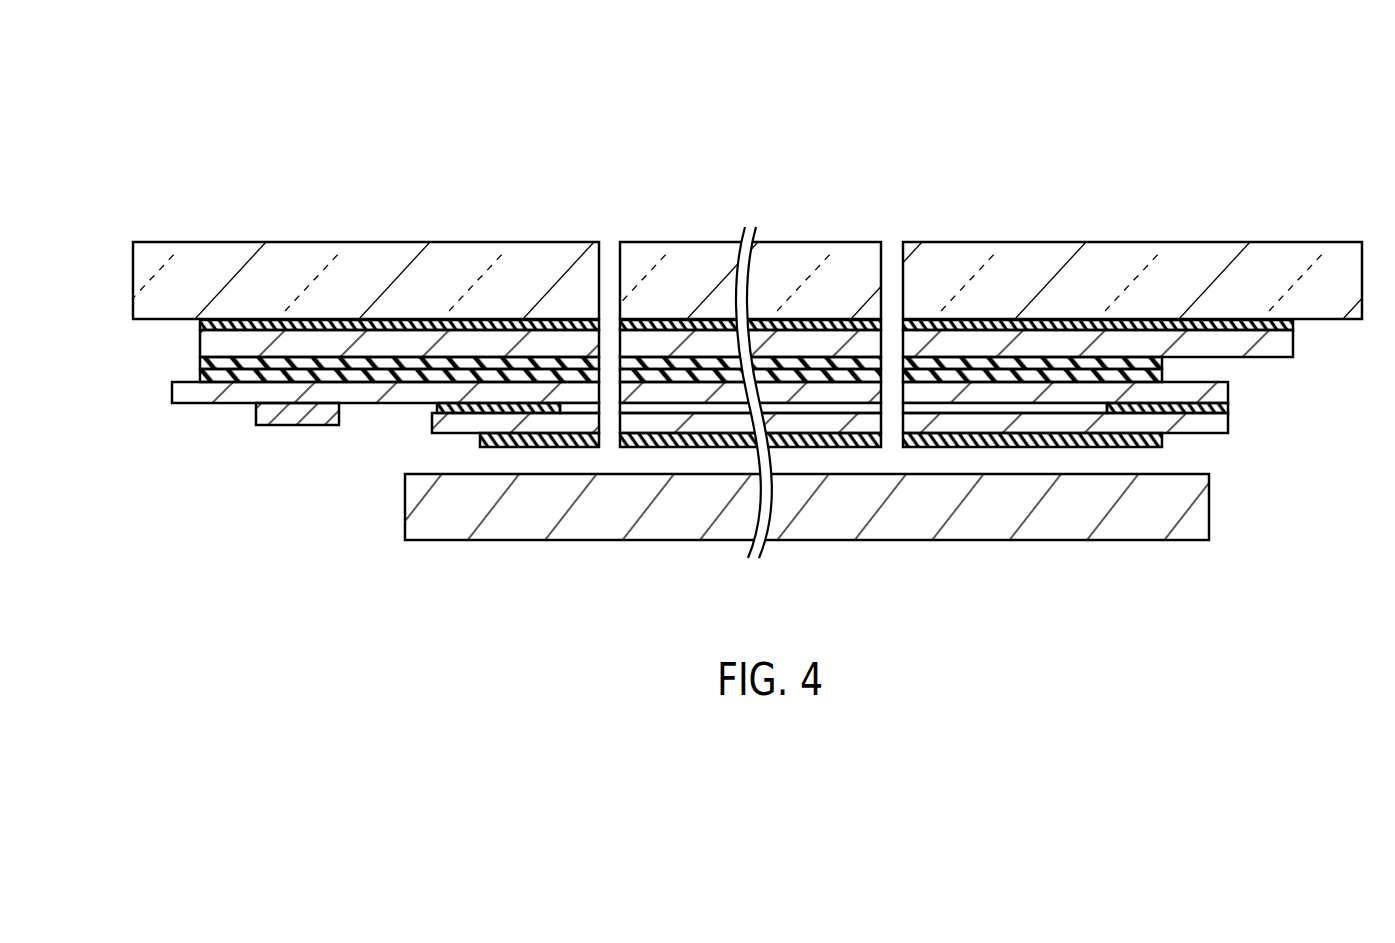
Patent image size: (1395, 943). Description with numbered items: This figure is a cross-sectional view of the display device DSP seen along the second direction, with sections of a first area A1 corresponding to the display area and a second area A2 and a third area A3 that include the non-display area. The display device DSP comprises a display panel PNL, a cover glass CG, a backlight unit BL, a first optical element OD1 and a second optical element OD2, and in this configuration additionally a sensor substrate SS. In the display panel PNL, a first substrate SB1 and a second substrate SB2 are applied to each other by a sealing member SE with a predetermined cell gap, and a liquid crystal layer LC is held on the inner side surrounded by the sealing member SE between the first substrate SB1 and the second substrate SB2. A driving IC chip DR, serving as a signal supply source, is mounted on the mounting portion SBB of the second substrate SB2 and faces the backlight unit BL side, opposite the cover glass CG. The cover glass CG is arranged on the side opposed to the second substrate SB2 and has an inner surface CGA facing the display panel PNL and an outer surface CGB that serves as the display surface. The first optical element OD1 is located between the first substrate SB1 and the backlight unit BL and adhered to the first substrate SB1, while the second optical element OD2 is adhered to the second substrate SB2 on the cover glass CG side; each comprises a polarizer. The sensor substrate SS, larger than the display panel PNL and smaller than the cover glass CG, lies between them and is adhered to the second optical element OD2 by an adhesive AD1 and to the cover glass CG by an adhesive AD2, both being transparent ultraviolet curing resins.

The display device DSP is at (1036, 121).
The first area A1 is at (880, 182).
The second area A2 is at (1362, 182).
The third area A3 is at (598, 182).
The cover glass CG is at (1182, 254).
The inner surface CGA is at (969, 333).
The outer surface CGB is at (1005, 241).
The adhesive AD2 is at (218, 326).
The sensor substrate SS is at (213, 343).
The adhesive AD1 is at (206, 365).
The second optical element OD2 is at (223, 378).
The mounting portion SBB is at (365, 403).
The driving IC chip DR is at (290, 416).
The display panel PNL is at (867, 482).
The second substrate SB2 is at (1222, 393).
The liquid crystal layer LC is at (1000, 408).
The sealing member SE is at (1222, 407).
The first substrate SB1 is at (1213, 436).
The first optical element OD1 is at (480, 440).
The backlight unit BL is at (506, 530).